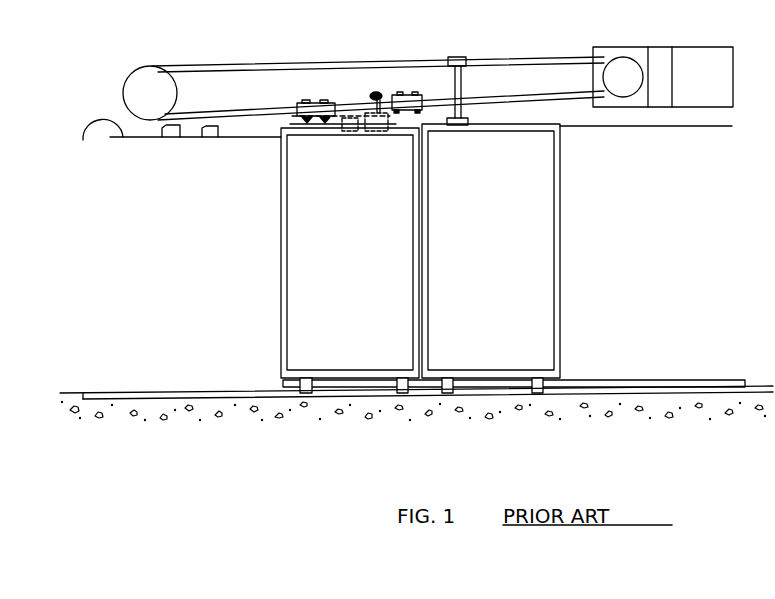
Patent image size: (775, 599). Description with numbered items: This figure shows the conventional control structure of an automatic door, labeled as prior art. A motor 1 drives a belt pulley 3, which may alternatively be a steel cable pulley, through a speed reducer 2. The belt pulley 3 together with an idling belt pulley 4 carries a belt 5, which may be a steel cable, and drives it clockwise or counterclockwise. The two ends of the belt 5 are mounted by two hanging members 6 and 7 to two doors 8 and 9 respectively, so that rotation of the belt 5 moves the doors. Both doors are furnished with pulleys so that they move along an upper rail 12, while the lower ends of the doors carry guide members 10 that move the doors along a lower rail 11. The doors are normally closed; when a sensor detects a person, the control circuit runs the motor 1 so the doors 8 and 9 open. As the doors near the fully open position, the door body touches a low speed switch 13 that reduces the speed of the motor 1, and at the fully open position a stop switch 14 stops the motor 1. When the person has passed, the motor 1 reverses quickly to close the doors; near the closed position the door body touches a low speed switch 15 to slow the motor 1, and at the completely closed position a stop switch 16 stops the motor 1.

The motor 1 is at (697, 53).
The speed reducer 2 is at (615, 42).
The belt pulley 3 is at (632, 88).
The idling belt pulley 4 is at (150, 77).
The belt 5 is at (530, 57).
The hanging member 6 is at (315, 103).
The hanging member 7 is at (458, 57).
The door 8 is at (296, 290).
The door 9 is at (543, 277).
The guide member 10 is at (567, 378).
The rail 11 is at (725, 382).
The rail 12 is at (98, 143).
The low speed switch 13 is at (212, 140).
The stop switch 14 is at (170, 137).
The low speed switch 15 is at (350, 133).
The stop switch 16 is at (382, 135).